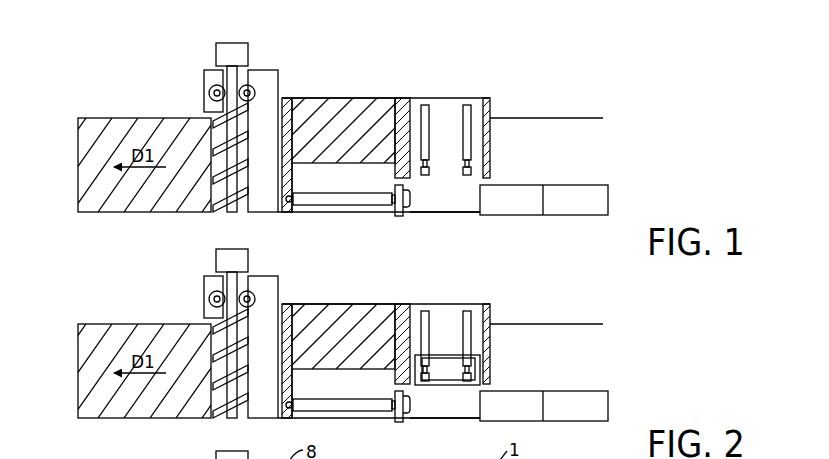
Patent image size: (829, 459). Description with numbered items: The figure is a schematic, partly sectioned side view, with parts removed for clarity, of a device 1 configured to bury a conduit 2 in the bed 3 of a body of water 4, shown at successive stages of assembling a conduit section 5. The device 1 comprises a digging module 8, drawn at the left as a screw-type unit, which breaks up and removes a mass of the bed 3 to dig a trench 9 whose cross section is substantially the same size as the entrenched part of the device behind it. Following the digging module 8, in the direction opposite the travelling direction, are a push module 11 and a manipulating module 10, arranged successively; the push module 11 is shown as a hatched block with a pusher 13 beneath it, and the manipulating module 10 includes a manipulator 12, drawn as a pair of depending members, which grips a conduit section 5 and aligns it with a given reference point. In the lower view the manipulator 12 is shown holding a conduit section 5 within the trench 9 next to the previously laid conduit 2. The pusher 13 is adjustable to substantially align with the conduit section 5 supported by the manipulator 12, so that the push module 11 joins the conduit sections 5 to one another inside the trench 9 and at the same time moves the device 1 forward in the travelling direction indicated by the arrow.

In FIG. 1, the device 1 is at (478, 76).
In FIG. 2, the device 1 is at (362, 329).
In FIG. 1, the conduit 2 is at (582, 182).
In FIG. 2, the conduit 2 is at (548, 382).
In FIG. 1, the bed 3 is at (86, 150).
In FIG. 2, the bed 3 is at (144, 371).
In FIG. 1, the body of water 4 is at (124, 92).
In FIG. 2, the body of water 4 is at (103, 279).
In FIG. 2, the conduit section 5 is at (448, 379).
In FIG. 1, the digging module 8 is at (274, 56).
In FIG. 2, the digging module 8 is at (266, 256).
In FIG. 1, the trench 9 is at (503, 147).
In FIG. 2, the trench 9 is at (488, 373).
In FIG. 1, the manipulating module 10 is at (500, 110).
In FIG. 2, the manipulating module 10 is at (543, 331).
In FIG. 1, the push module 11 is at (343, 90).
In FIG. 2, the push module 11 is at (344, 339).
In FIG. 1, the manipulator 12 is at (462, 118).
In FIG. 2, the manipulator 12 is at (446, 324).
In FIG. 1, the pusher 13 is at (360, 190).
In FIG. 2, the pusher 13 is at (340, 392).